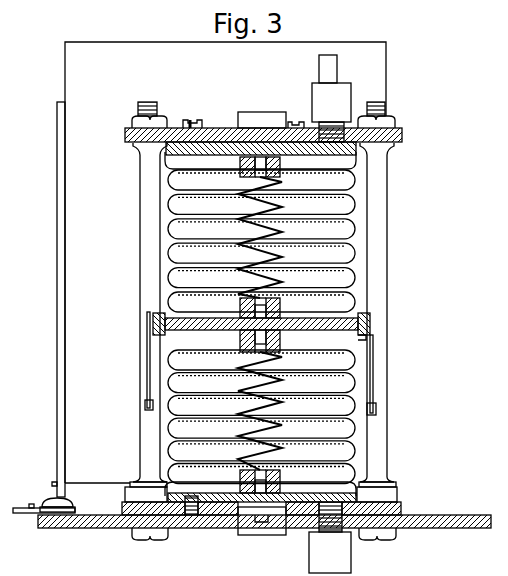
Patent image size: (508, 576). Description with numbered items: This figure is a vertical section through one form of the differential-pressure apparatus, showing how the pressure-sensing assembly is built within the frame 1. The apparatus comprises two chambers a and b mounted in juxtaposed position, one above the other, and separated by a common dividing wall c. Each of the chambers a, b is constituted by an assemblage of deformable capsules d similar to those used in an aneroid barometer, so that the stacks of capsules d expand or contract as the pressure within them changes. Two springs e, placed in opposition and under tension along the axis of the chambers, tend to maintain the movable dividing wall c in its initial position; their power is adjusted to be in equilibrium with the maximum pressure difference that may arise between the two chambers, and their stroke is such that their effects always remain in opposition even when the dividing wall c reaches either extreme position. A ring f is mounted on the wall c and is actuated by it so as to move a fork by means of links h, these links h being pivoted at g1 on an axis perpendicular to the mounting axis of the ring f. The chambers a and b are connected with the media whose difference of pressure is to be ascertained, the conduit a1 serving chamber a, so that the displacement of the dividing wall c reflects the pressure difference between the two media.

The frame 1 is at (219, 264).
The conduit a1 is at (330, 73).
The chamber a is at (260, 232).
The chamber b is at (260, 423).
The dividing wall c is at (155, 318).
The deformable capsule d is at (234, 324).
The spring e is at (258, 323).
The ring f is at (372, 318).
The pivot axis g1 is at (358, 337).
The link h is at (375, 392).